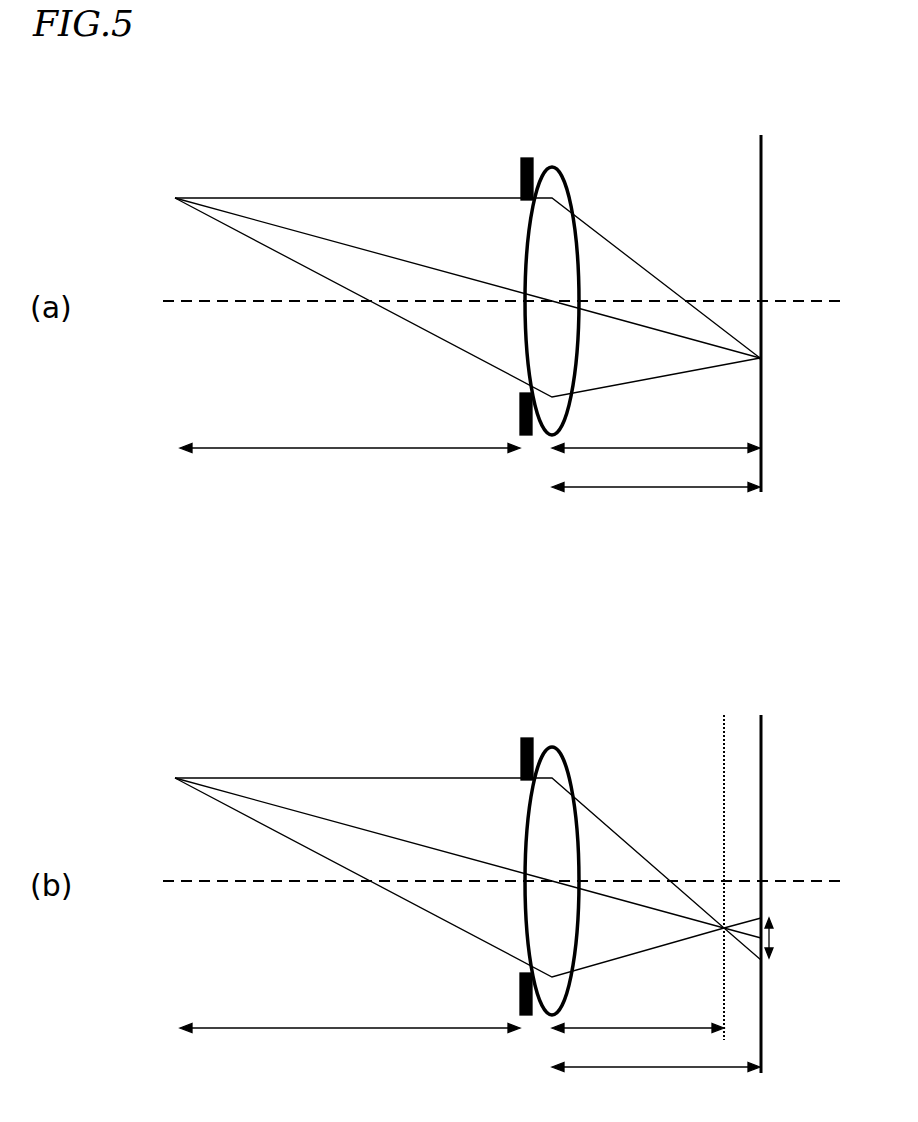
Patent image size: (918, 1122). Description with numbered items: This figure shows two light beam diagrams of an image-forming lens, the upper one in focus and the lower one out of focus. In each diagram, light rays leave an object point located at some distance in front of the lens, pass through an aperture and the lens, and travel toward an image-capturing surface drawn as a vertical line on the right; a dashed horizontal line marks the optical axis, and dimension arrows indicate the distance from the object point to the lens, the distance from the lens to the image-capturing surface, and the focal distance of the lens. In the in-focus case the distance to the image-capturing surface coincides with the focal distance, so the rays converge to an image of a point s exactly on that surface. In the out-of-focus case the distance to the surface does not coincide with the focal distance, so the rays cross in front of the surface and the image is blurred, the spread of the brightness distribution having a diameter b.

The point s is at (771, 360).
The diameter b is at (781, 938).